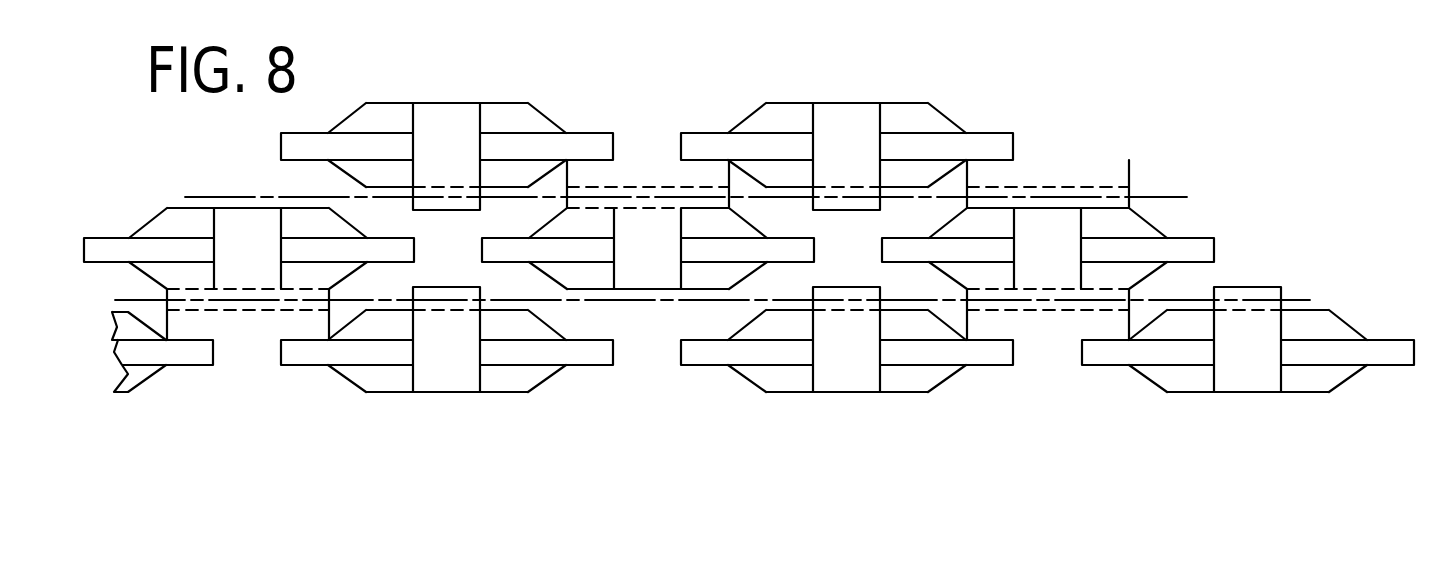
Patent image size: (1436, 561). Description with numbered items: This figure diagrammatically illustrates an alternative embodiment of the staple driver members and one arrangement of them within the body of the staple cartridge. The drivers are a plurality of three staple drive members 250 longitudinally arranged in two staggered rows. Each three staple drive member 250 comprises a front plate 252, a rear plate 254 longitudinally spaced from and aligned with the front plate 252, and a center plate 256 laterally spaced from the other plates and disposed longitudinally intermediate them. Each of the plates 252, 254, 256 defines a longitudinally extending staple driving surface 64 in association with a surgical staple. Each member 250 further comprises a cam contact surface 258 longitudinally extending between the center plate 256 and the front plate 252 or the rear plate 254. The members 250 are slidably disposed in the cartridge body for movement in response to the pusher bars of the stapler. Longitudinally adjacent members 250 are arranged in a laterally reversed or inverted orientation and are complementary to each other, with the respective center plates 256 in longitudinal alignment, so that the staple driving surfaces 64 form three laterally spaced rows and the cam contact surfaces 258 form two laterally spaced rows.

The three staple drive member 250 is at (797, 101).
The staple driving surface 64 is at (547, 171).
The front plate 252 is at (990, 146).
The rear plate 254 is at (588, 146).
The center plate 256 is at (720, 246).
The cam contact surface 258 is at (664, 187).